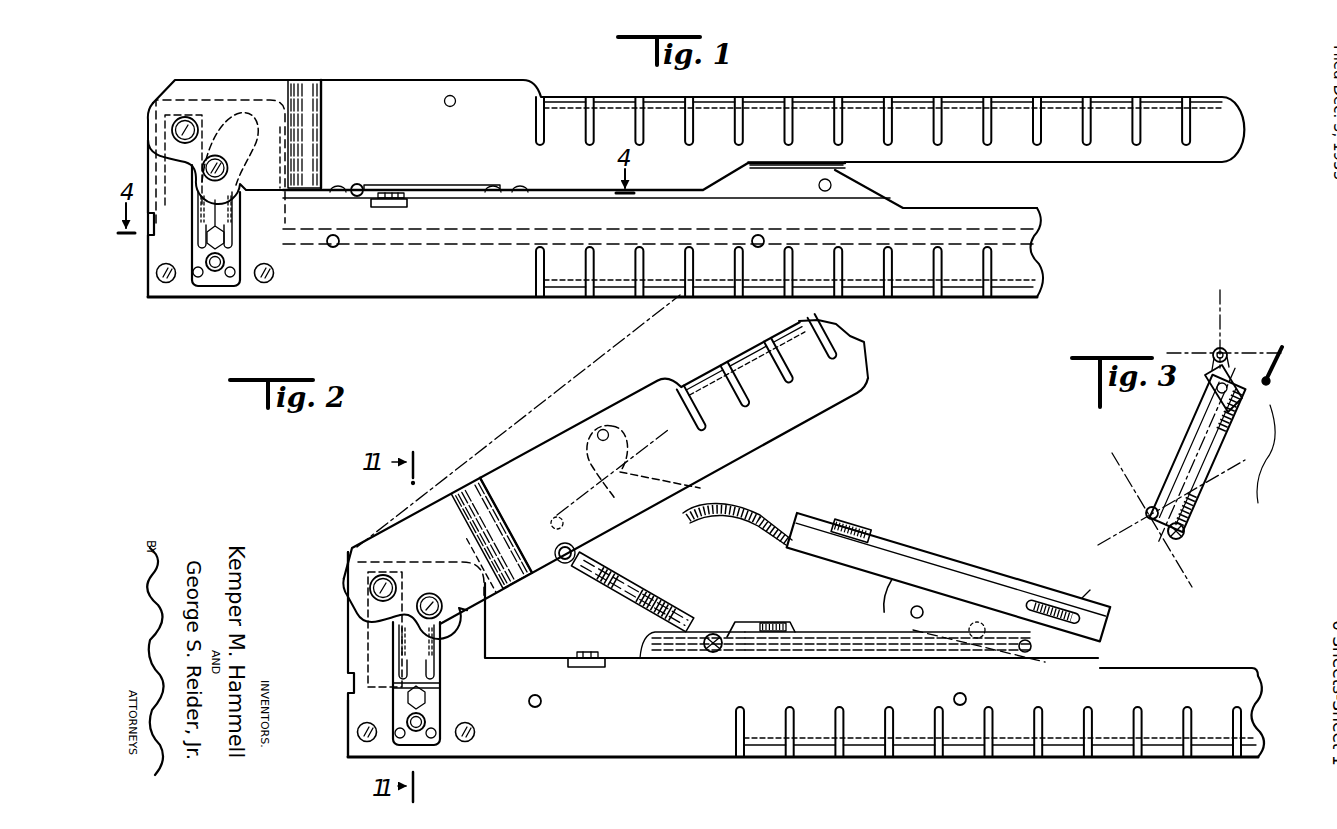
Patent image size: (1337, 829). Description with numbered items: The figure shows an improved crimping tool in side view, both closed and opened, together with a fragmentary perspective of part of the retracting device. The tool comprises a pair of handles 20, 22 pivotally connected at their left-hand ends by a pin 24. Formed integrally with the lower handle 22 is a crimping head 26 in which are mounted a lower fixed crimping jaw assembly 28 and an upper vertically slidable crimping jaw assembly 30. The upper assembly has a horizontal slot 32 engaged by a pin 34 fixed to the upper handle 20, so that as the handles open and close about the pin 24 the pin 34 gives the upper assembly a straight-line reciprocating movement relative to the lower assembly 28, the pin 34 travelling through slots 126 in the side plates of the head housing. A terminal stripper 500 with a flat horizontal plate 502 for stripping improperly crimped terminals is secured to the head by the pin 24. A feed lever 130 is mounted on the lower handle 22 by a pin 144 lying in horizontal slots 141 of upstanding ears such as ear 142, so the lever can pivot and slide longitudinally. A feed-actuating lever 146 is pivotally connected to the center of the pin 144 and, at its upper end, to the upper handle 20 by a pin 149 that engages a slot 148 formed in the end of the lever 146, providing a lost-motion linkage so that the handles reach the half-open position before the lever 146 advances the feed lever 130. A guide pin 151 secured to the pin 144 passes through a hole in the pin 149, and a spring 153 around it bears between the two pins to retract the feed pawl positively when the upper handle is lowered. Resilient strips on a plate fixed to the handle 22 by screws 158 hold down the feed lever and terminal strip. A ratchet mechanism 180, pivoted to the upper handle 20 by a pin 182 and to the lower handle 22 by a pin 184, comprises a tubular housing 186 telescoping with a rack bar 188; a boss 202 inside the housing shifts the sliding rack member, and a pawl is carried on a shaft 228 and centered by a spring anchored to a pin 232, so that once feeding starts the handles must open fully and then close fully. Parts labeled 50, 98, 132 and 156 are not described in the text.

In FIG. 1, the handle 20 is at (930, 96).
In FIG. 2, the handle 20 is at (918, 383).
In FIG. 1, the handle 22 is at (1015, 275).
In FIG. 2, the handle 22 is at (1074, 762).
In FIG. 1, the pin 24 is at (175, 128).
In FIG. 2, the pin 24 is at (386, 575).
In FIG. 1, the crimping head 26 is at (168, 296).
In FIG. 2, the crimping head 26 is at (349, 752).
In FIG. 1, the lower fixed crimping jaw assembly 28 is at (214, 286).
In FIG. 1, the upper vertically slidable crimping jaw assembly 30 is at (283, 217).
In FIG. 2, the upper vertically slidable crimping jaw assembly 30 is at (416, 683).
In FIG. 2, the horizontal slot 32 is at (352, 611).
In FIG. 1, the pin 34 is at (229, 170).
In FIG. 2, the pin 34 is at (443, 613).
In FIG. 1, the hidden member 50 is at (458, 246).
In FIG. 1, the screws 98 is at (156, 275).
In FIG. 2, the screws 98 is at (357, 730).
In FIG. 1, the slots 126 is at (240, 112).
In FIG. 2, the slots 126 is at (643, 463).
In FIG. 2, the lever 130 is at (745, 620).
In FIG. 2, the latch tab 132 is at (768, 621).
In FIG. 2, the horizontal slots 141 is at (667, 656).
In FIG. 2, the upstanding ear 142 is at (828, 631).
In FIG. 2, the pin 144 is at (715, 653).
In FIG. 3, the pin 144 is at (1186, 536).
In FIG. 1, the feed-actuating lever 146 is at (420, 185).
In FIG. 2, the feed-actuating lever 146 is at (641, 596).
In FIG. 3, the feed-actuating lever 146 is at (1192, 476).
In FIG. 3, the slot 148 is at (1212, 352).
In FIG. 1, the pin 149 is at (358, 184).
In FIG. 2, the pin 149 is at (556, 548).
In FIG. 3, the pin 149 is at (1230, 352).
In FIG. 3, the guide pin 151 is at (1244, 460).
In FIG. 3, the spring 153 is at (1268, 470).
In FIG. 1, the latch base 156 is at (372, 206).
In FIG. 2, the latch base 156 is at (575, 667).
In FIG. 1, the screws 158 is at (388, 193).
In FIG. 2, the screws 158 is at (590, 652).
In FIG. 2, the ratchet mechanism 180 is at (962, 548).
In FIG. 1, the pin 182 is at (456, 104).
In FIG. 2, the pin 182 is at (608, 434).
In FIG. 1, the pin 184 is at (818, 186).
In FIG. 2, the pin 184 is at (1030, 652).
In FIG. 1, the tubular housing 186 is at (780, 163).
In FIG. 2, the tubular housing 186 is at (852, 528).
In FIG. 2, the rack bar 188 is at (716, 510).
In FIG. 2, the boss 202 is at (1070, 612).
In FIG. 3, the boss 202 is at (1104, 579).
In FIG. 2, the shaft 228 is at (977, 621).
In FIG. 2, the pin 232 is at (910, 612).
In FIG. 1, the terminal stripper 500 is at (166, 182).
In FIG. 2, the terminal stripper 500 is at (372, 660).
In FIG. 2, the flat horizontal plate 502 is at (368, 685).